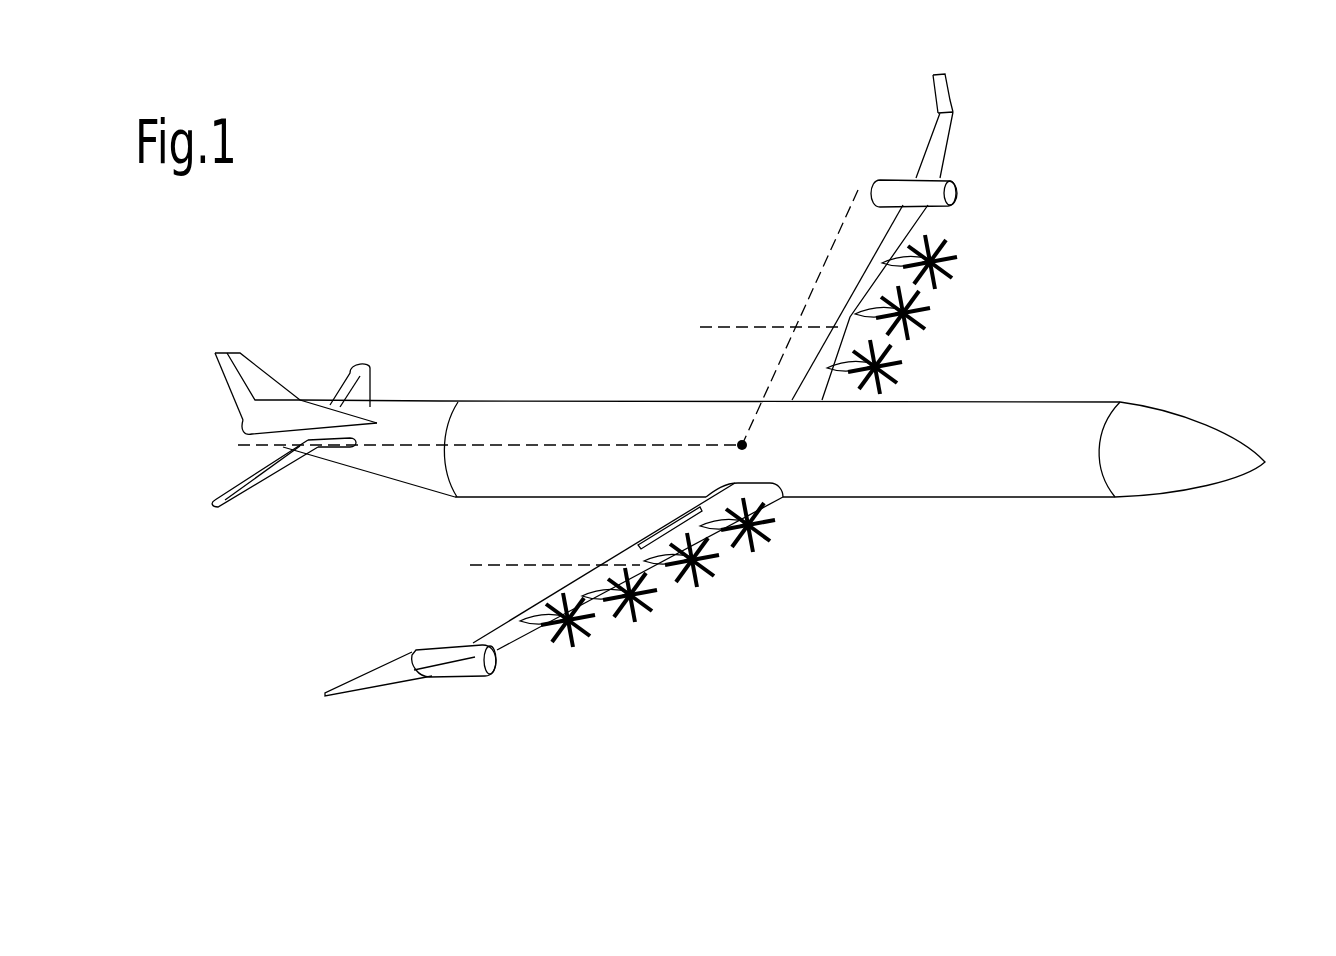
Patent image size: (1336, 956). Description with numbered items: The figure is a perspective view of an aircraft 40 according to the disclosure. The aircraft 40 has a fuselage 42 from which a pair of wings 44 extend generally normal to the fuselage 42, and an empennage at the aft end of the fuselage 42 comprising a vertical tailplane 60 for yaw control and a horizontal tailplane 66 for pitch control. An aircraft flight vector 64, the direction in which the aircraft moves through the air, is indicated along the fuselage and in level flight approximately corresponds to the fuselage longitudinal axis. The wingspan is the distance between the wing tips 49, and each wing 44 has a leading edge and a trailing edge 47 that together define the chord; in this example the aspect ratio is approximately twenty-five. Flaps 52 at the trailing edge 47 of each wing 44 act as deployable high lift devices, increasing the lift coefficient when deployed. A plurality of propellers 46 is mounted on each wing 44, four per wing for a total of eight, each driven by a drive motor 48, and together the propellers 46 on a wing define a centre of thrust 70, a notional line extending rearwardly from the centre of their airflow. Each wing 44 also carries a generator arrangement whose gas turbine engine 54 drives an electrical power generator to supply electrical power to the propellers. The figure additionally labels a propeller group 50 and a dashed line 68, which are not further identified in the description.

The aircraft 40 is at (430, 258).
The fuselage 42 is at (963, 470).
The wing 44 is at (886, 237).
The propeller 46 is at (920, 307).
The trailing edge 47 is at (922, 150).
The drive motor 48 is at (676, 562).
The wing tip 49 is at (933, 78).
The propulsors on near wing 50 is at (755, 545).
The flap 52 is at (650, 540).
The gas turbine engine 54 is at (877, 197).
The vertical tailplane 60 is at (262, 353).
The aircraft flight vector 64 is at (492, 440).
The horizontal tailplane 66 is at (285, 490).
The wing axis 68 is at (813, 290).
The centre of thrust 70 is at (705, 326).